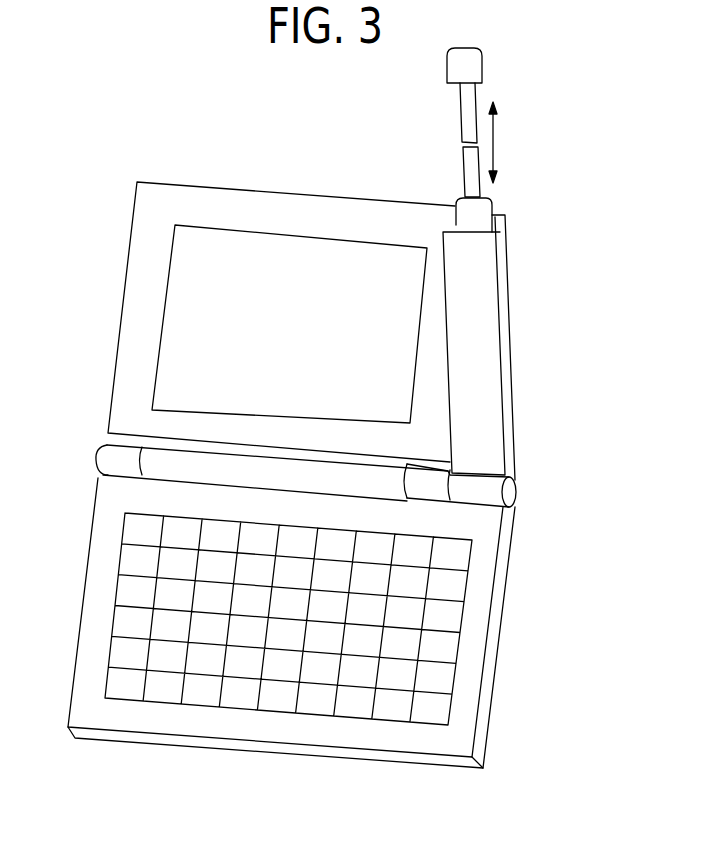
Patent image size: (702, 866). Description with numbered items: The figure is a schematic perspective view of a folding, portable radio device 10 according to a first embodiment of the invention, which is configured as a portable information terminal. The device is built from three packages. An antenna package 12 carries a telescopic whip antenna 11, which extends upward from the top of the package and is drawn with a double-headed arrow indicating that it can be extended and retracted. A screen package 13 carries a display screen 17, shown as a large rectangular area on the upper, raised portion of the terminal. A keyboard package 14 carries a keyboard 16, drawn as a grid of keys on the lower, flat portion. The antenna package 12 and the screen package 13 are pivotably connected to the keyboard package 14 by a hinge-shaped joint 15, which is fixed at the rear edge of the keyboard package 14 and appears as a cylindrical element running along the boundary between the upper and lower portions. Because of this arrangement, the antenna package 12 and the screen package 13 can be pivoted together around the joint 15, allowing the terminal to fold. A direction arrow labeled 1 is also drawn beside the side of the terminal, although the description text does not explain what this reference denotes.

The direction of insertion 1 is at (553, 533).
The folding, portable radio device 10 is at (158, 154).
The telescopic whip antenna 11 is at (478, 70).
The antenna package 12 is at (507, 315).
The screen package 13 is at (138, 260).
The keyboard package 14 is at (503, 617).
The hinge-shaped joint 15 is at (520, 493).
The keyboard 16 is at (458, 683).
The display screen 17 is at (175, 332).